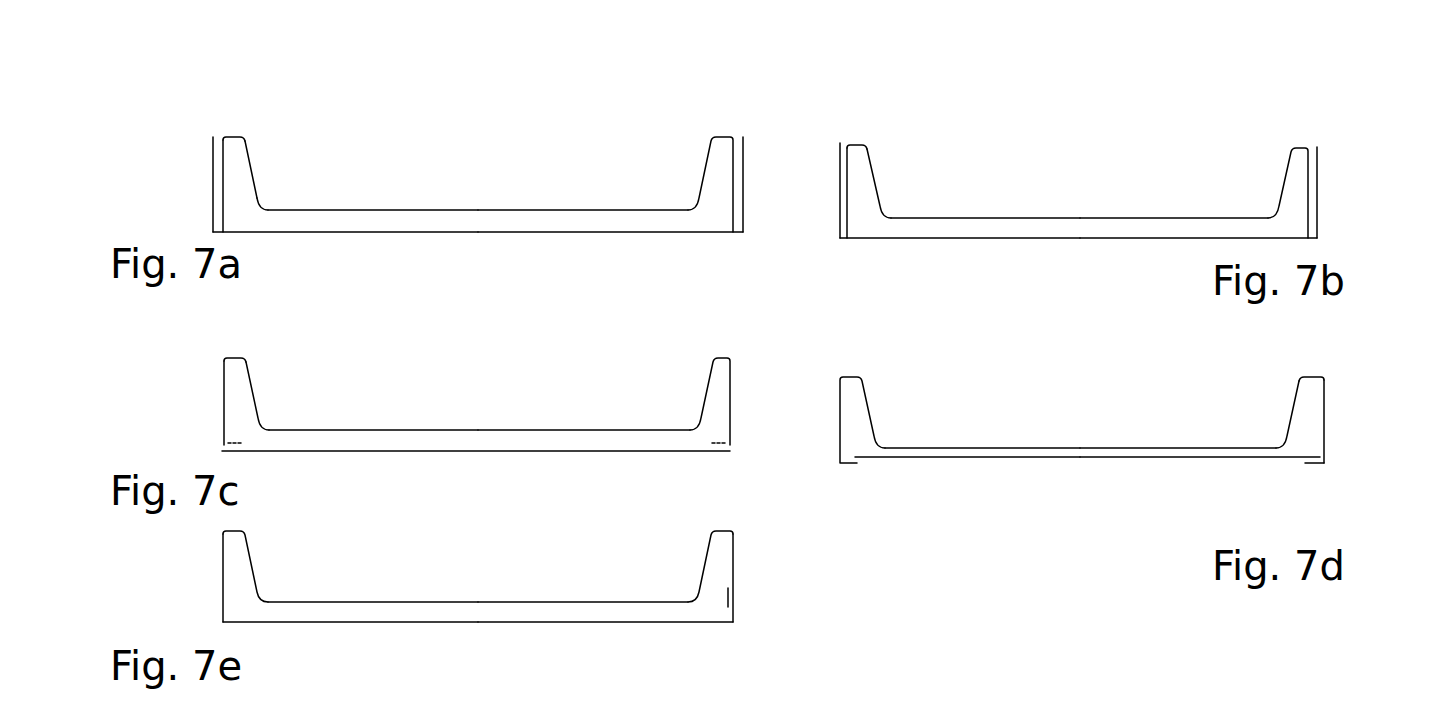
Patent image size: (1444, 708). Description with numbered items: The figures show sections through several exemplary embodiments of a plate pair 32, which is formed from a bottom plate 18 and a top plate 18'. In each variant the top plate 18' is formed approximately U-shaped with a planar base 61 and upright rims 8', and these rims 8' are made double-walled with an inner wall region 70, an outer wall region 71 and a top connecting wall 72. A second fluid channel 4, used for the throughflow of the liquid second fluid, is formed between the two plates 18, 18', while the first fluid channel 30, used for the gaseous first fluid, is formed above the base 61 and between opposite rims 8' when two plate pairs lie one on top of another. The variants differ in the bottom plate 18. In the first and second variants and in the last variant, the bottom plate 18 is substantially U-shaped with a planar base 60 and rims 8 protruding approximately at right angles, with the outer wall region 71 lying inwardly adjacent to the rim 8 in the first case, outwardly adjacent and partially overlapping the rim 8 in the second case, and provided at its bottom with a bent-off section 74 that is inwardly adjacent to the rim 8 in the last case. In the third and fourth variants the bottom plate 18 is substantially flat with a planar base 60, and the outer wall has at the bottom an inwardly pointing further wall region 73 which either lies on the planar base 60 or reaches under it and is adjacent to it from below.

In FIG. 7A, the second fluid channel 4 is at (533, 220).
In FIG. 7C, the second fluid channel 4 is at (408, 440).
In FIG. 7A, the rim 8 is at (459, 159).
In FIG. 7B, the rim 8 is at (1106, 161).
In FIG. 7E, the rim 8 is at (525, 581).
In FIG. 7A, the rim 8' is at (511, 139).
In FIG. 7C, the rim 8' is at (739, 375).
In FIG. 7D, the rim 8' is at (884, 400).
In FIG. 7A, the plate 18 is at (610, 268).
In FIG. 7B, the plate 18 is at (1198, 274).
In FIG. 7C, the plate 18 is at (476, 482).
In FIG. 7D, the plate 18 is at (967, 496).
In FIG. 7E, the plate 18 is at (601, 652).
In FIG. 7A, the plate 18' is at (583, 168).
In FIG. 7B, the plate 18' is at (1024, 173).
In FIG. 7C, the plate 18' is at (584, 387).
In FIG. 7D, the plate 18' is at (982, 406).
In FIG. 7E, the plate 18' is at (583, 563).
In FIG. 7C, the first fluid channel 30 is at (345, 428).
In FIG. 7A, the plate pair 32 is at (528, 105).
In FIG. 7B, the plate pair 32 is at (1102, 102).
In FIG. 7C, the plate pair 32 is at (528, 387).
In FIG. 7D, the plate pair 32 is at (1052, 495).
In FIG. 7E, the plate pair 32 is at (572, 640).
In FIG. 7A, the planar base 60 is at (445, 233).
In FIG. 7B, the planar base 60 is at (1023, 238).
In FIG. 7C, the planar base 60 is at (517, 452).
In FIG. 7D, the planar base 60 is at (1185, 460).
In FIG. 7E, the planar base 60 is at (397, 623).
In FIG. 7A, the planar base 61 is at (348, 210).
In FIG. 7B, the planar base 61 is at (1187, 218).
In FIG. 7D, the planar base 61 is at (1123, 447).
In FIG. 7E, the planar base 61 is at (350, 600).
In FIG. 7A, the inner wall region 70 is at (260, 193).
In FIG. 7B, the inner wall region 70 is at (873, 203).
In FIG. 7C, the inner wall region 70 is at (260, 400).
In FIG. 7D, the inner wall region 70 is at (1288, 423).
In FIG. 7A, the outer wall region 71 is at (210, 197).
In FIG. 7B, the outer wall region 71 is at (840, 168).
In FIG. 7C, the outer wall region 71 is at (223, 395).
In FIG. 7D, the outer wall region 71 is at (1327, 408).
In FIG. 7E, the outer wall region 71 is at (735, 563).
In FIG. 7A, the top connecting wall 72 is at (228, 137).
In FIG. 7B, the top connecting wall 72 is at (847, 143).
In FIG. 7C, the top connecting wall 72 is at (233, 358).
In FIG. 7D, the top connecting wall 72 is at (1310, 378).
In FIG. 7C, the further wall region 73 is at (232, 447).
In FIG. 7D, the further wall region 73 is at (1312, 465).
In FIG. 7E, the bent-off section 74 is at (728, 597).